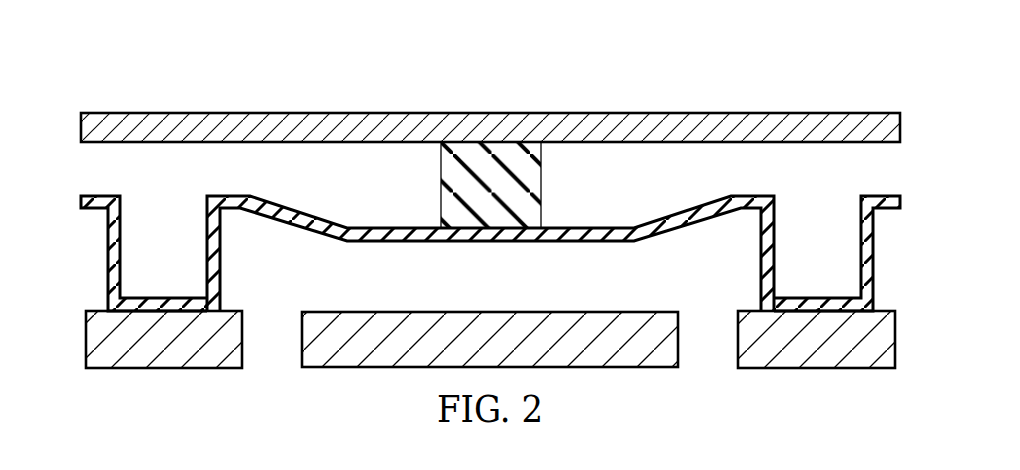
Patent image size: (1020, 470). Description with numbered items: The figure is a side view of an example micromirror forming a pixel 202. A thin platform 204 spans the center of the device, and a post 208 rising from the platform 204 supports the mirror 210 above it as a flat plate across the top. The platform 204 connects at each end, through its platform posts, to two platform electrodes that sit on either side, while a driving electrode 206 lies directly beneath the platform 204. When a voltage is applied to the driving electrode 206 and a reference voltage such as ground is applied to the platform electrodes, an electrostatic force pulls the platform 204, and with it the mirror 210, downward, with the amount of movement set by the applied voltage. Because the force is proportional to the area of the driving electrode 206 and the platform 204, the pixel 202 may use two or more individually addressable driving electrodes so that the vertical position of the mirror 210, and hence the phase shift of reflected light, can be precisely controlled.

The pixel 202 is at (298, 50).
The platform 204 is at (373, 227).
The driving electrode 206 is at (375, 368).
The post 208 is at (541, 177).
The mirror 210 is at (478, 121).